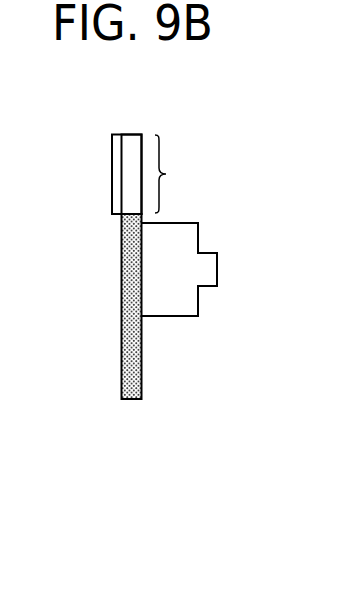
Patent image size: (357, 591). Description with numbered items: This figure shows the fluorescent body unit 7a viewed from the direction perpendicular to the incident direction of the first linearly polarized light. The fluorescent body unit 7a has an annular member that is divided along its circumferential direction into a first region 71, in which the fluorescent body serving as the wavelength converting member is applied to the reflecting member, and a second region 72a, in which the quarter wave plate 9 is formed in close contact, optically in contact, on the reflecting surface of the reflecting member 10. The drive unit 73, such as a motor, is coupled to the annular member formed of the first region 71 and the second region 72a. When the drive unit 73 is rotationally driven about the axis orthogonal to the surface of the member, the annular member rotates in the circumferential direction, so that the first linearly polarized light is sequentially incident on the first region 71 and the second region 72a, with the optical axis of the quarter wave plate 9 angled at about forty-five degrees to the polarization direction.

The quarter wave plate 9 is at (117, 173).
The reflecting member 10 is at (132, 142).
The first region 71 is at (130, 368).
The second region 72a is at (184, 174).
The drive unit 73 is at (180, 312).
The fluorescent body unit 7a is at (132, 399).